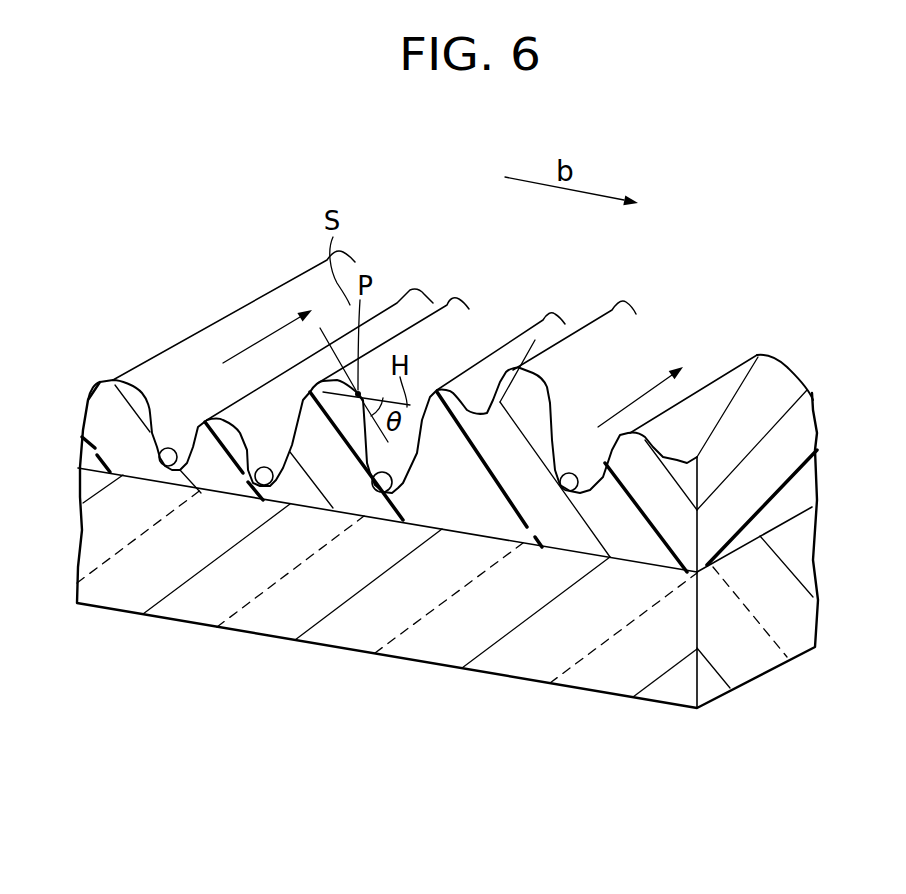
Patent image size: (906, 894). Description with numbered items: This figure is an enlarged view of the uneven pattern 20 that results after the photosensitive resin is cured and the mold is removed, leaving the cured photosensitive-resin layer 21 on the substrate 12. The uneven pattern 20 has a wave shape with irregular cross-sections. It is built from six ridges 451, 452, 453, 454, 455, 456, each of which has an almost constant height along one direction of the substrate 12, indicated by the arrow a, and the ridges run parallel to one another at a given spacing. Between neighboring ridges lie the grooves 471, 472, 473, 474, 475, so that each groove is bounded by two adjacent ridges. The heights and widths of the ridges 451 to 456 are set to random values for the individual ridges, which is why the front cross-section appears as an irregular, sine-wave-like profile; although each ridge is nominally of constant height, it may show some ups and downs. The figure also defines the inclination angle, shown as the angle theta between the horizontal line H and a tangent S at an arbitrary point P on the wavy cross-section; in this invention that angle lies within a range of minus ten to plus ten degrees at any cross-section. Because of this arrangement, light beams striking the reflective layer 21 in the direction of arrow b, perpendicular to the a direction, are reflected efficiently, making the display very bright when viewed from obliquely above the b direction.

The substrate 12 is at (399, 620).
The uneven pattern 20 is at (707, 318).
The cured photosensitive-resin layer 21 is at (82, 448).
The ridge 451 is at (183, 353).
The ridge 452 is at (403, 297).
The ridge 453 is at (453, 300).
The ridge 454 is at (547, 310).
The ridge 455 is at (600, 317).
The ridge 456 is at (760, 380).
The groove 471 is at (155, 452).
The groove 472 is at (258, 468).
The groove 473 is at (378, 478).
The groove 474 is at (482, 410).
The groove 475 is at (557, 478).